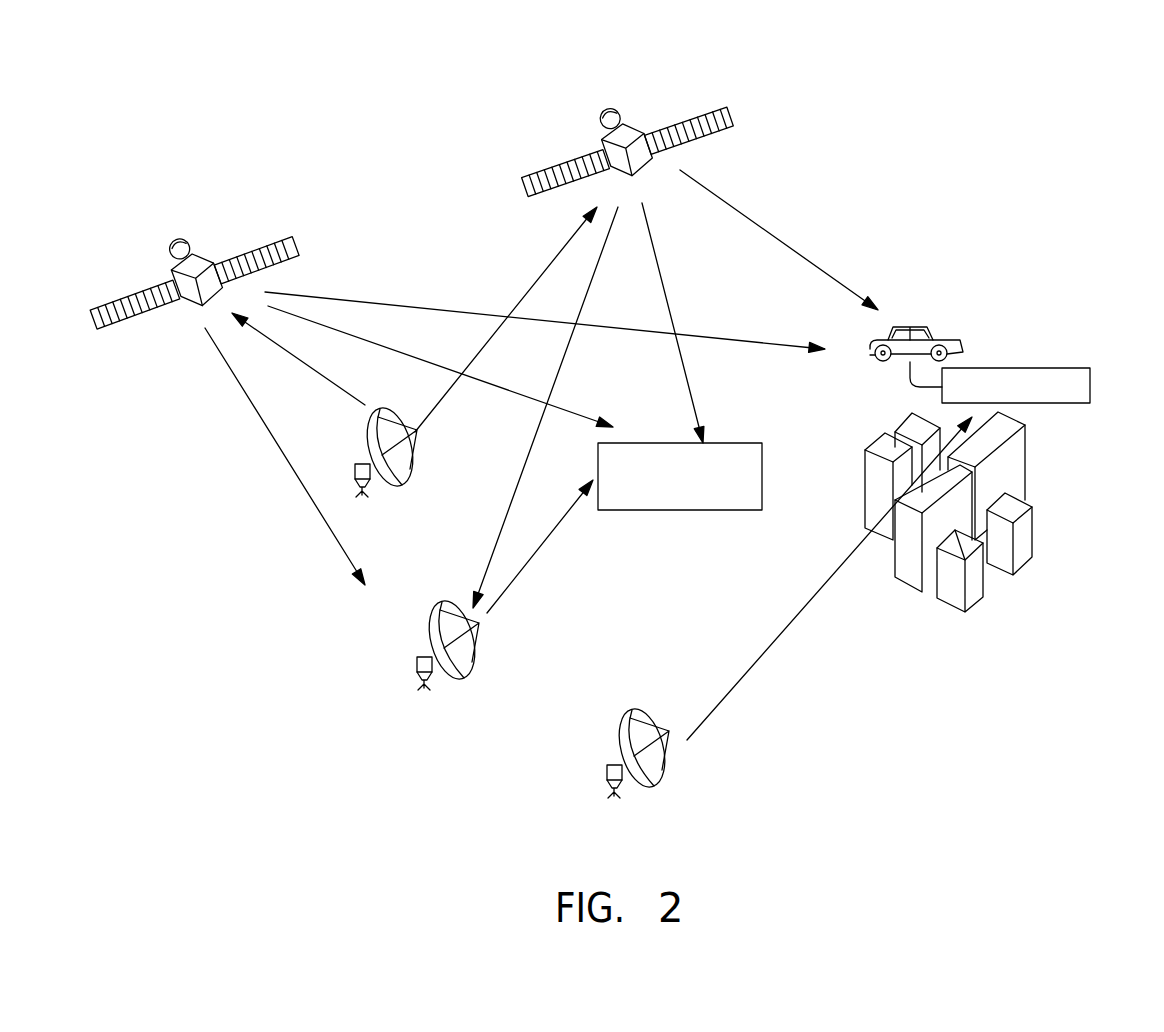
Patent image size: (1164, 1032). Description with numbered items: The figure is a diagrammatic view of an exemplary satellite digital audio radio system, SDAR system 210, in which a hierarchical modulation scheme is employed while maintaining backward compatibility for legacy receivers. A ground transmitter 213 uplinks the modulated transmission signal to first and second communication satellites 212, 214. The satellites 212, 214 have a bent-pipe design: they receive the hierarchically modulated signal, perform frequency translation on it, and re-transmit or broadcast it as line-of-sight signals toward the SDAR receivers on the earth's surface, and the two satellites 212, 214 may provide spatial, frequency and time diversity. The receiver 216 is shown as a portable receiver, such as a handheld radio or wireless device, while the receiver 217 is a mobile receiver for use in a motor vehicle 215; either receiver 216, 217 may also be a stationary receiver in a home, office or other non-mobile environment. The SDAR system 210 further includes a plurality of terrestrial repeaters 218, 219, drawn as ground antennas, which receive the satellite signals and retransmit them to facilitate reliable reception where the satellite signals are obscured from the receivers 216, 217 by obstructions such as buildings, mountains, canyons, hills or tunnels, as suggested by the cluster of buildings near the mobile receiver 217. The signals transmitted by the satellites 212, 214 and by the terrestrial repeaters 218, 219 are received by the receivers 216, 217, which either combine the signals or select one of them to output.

The SDAR system 210 is at (420, 75).
The first communication satellite 212 is at (283, 240).
The transmitter 213 is at (370, 437).
The second communication satellite 214 is at (535, 173).
The motor vehicle 215 is at (938, 333).
The portable receiver 216 is at (743, 442).
The mobile receiver 217 is at (1053, 368).
The terrestrial repeater 218 is at (428, 624).
The terrestrial repeater 219 is at (620, 740).